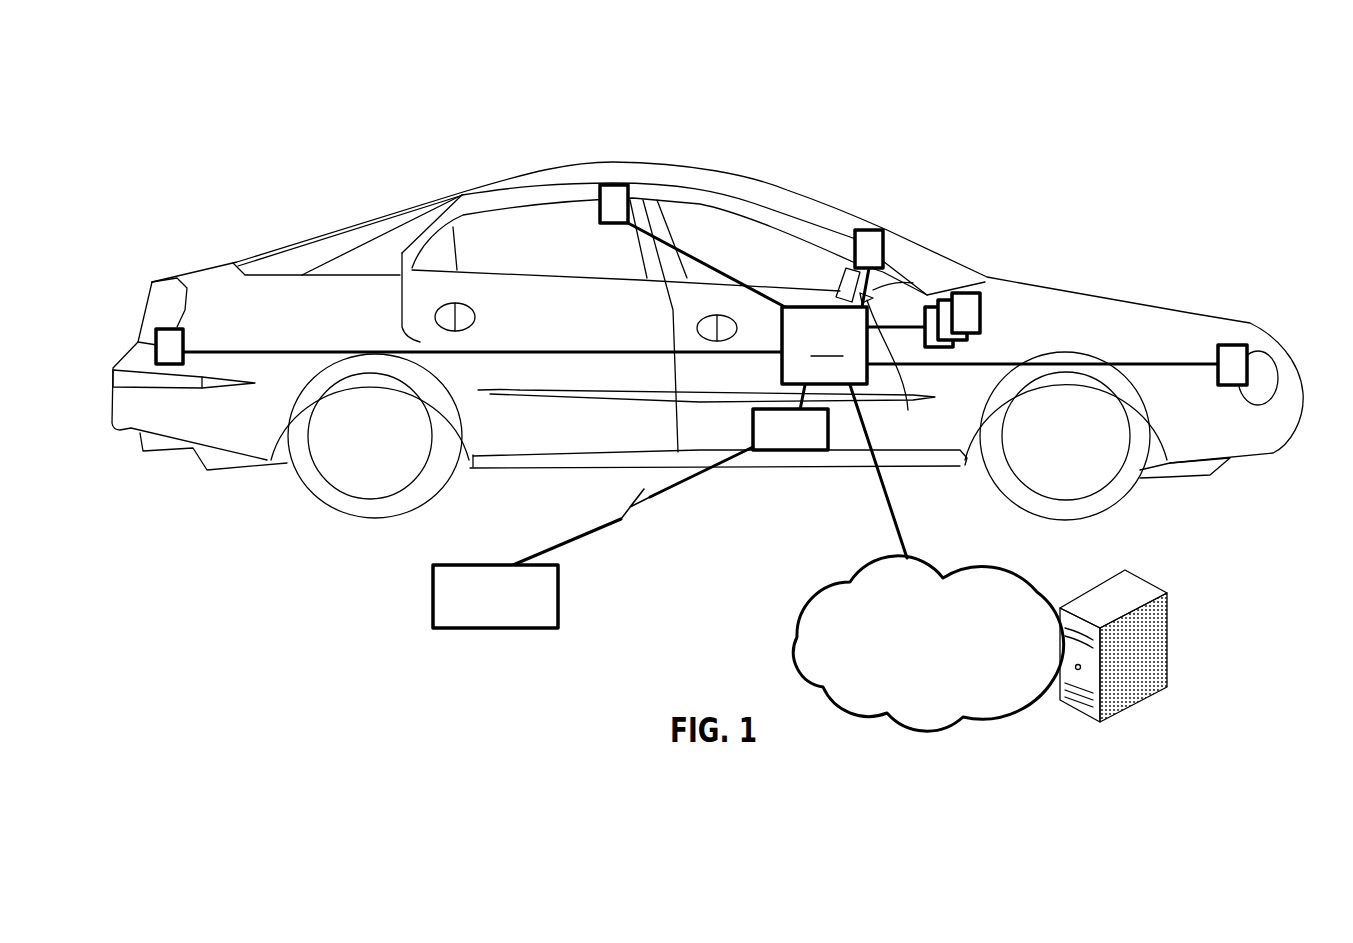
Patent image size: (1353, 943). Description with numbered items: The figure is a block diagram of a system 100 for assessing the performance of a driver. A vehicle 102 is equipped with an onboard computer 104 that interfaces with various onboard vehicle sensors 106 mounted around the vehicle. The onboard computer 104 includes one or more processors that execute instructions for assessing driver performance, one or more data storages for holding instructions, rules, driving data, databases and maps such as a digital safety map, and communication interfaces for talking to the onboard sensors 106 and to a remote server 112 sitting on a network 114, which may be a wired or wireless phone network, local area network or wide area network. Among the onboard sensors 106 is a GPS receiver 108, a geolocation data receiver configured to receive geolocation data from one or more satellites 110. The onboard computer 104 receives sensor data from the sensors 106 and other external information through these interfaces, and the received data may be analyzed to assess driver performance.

The vehicle sensing system 100 is at (1096, 130).
The vehicle 102 is at (787, 192).
The onboard computer 104 is at (700, 390).
The onboard vehicle sensors 106 is at (183, 322).
The GPS receiver 108 is at (773, 450).
The satellites 110 is at (433, 583).
The remote server 112 is at (1167, 607).
The network 114 is at (975, 645).